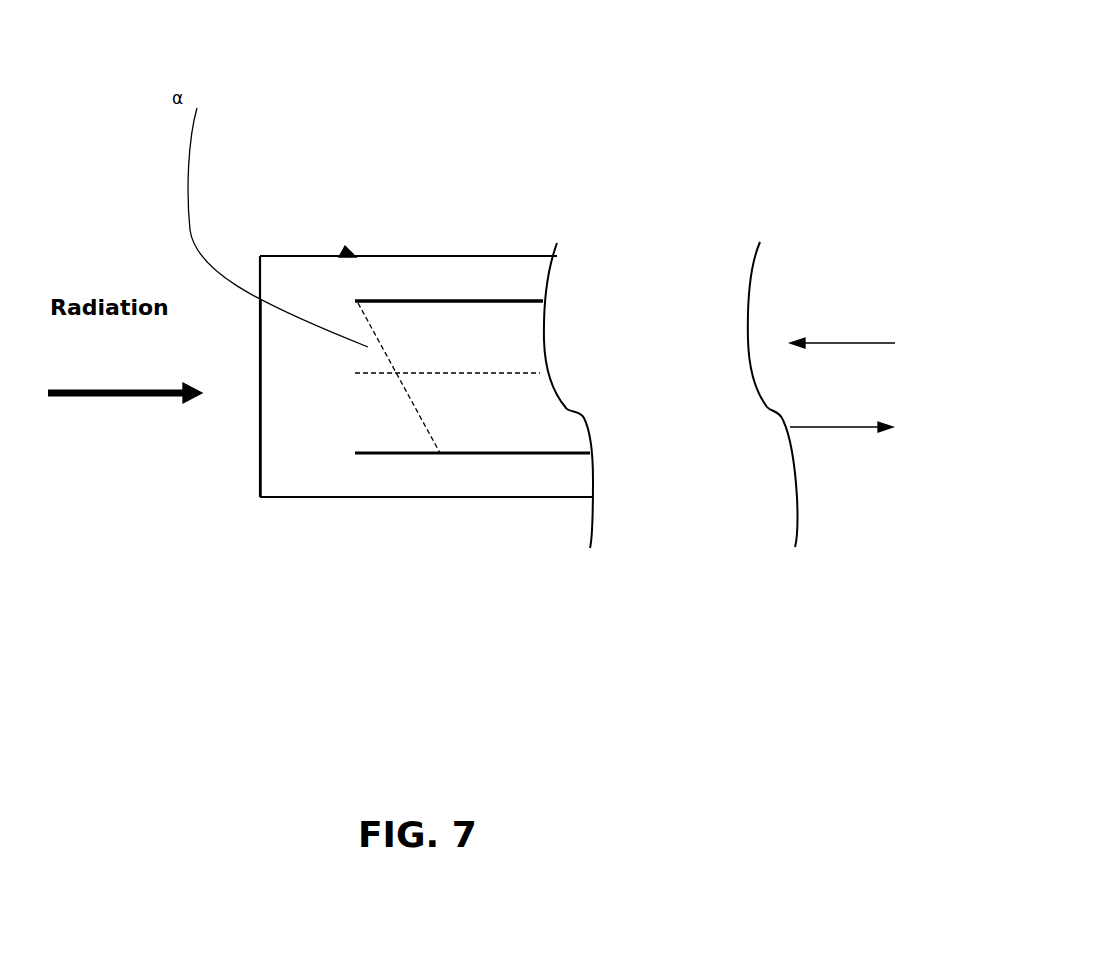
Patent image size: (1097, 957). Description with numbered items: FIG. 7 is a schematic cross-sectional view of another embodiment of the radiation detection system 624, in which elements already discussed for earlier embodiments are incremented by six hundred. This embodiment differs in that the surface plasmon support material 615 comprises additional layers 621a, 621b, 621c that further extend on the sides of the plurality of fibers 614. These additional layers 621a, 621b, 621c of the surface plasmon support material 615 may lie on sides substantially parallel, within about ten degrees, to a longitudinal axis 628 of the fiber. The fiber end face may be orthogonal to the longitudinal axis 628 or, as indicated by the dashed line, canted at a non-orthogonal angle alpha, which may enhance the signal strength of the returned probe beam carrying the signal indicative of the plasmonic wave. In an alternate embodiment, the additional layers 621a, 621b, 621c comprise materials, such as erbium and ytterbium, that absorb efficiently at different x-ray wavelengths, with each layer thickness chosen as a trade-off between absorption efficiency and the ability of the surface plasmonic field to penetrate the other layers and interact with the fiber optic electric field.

The plurality of fibers 614 is at (470, 425).
The surface plasmon support material 615 is at (348, 254).
The additional layer 621a is at (283, 415).
The additional layer 621b is at (456, 262).
The additional layer 621c is at (447, 485).
The radiation detection system 624 is at (886, 140).
The longitudinal axis 628 is at (538, 370).